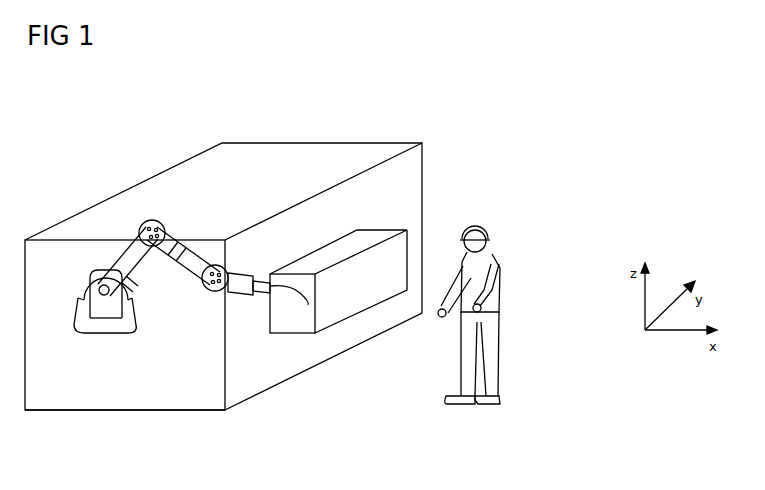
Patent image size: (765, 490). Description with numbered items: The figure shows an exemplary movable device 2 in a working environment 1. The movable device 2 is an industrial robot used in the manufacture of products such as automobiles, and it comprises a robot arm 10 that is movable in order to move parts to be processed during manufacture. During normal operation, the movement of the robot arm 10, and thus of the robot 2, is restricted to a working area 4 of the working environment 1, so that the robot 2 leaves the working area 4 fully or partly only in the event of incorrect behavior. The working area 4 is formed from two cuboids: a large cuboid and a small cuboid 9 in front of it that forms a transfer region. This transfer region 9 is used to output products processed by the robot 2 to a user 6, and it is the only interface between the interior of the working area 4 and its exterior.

The working environment 1 is at (91, 155).
The movable device 2 is at (110, 335).
The working area 4 is at (154, 394).
The user 6 is at (500, 320).
The small cuboid / transfer region 9 is at (373, 232).
The robot arm 10 is at (247, 268).